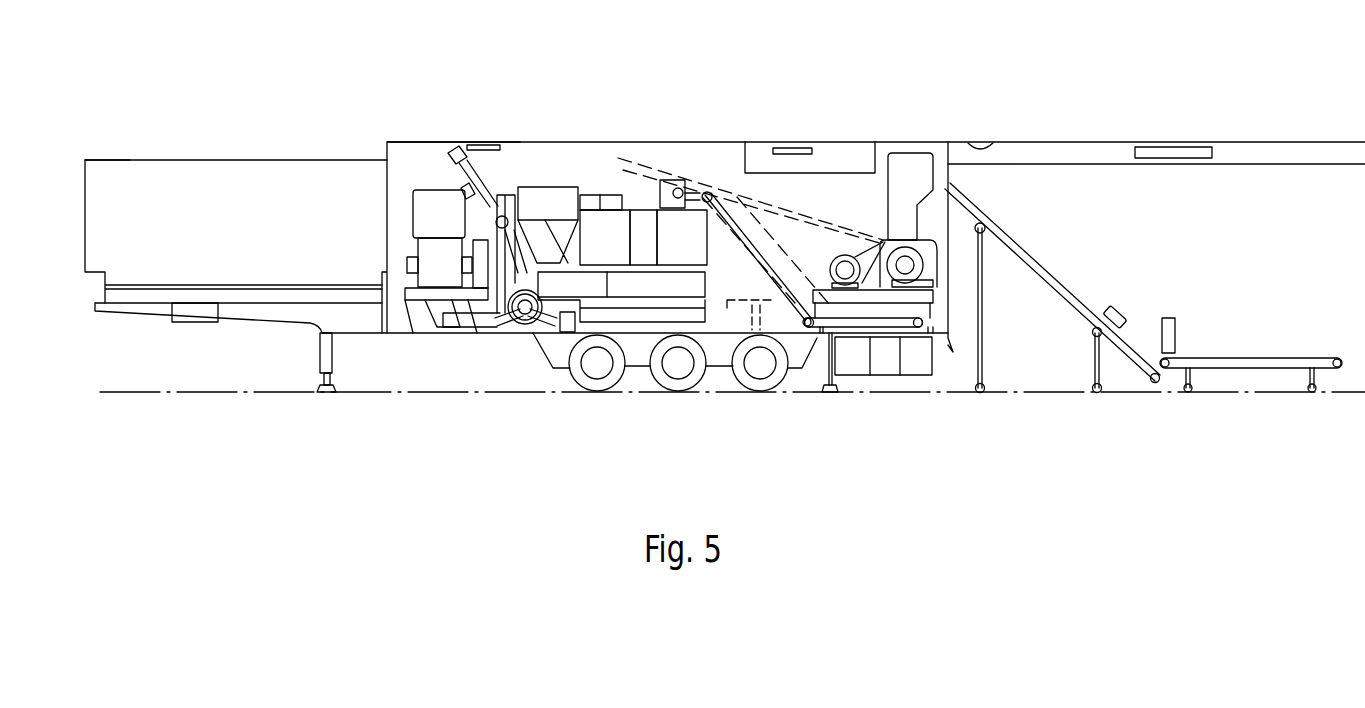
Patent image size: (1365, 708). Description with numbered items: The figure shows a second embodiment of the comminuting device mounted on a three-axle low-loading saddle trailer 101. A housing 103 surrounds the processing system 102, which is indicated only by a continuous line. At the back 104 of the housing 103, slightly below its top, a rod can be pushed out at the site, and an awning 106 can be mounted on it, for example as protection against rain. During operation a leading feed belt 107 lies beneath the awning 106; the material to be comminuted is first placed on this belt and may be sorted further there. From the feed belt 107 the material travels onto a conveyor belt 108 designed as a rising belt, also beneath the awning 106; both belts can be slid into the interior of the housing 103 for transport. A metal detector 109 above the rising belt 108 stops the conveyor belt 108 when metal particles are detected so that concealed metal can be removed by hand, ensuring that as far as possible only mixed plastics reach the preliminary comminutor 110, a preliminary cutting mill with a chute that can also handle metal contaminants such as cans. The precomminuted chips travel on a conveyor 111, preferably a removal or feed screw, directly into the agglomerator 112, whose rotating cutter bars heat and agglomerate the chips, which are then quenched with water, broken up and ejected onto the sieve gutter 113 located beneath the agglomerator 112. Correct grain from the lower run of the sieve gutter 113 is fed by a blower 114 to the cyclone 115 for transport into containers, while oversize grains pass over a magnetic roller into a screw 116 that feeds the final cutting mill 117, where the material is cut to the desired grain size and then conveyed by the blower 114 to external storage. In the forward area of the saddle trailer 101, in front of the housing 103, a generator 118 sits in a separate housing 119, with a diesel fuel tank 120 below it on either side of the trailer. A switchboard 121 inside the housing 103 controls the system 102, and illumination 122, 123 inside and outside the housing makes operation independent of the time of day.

The saddle trailer 101 is at (513, 322).
The system 102 is at (398, 152).
The housing 103 is at (838, 142).
The back 104 is at (946, 142).
The awning 106 is at (1086, 142).
The feed belt 107 is at (1279, 355).
The conveyor belt 108 is at (1036, 256).
The metal detector 109 is at (1125, 309).
The preliminary comminutor 110 is at (910, 151).
The conveyor 111 is at (723, 193).
The agglomerator 112 is at (608, 195).
The sieve gutter 113 is at (663, 281).
The blower 114 is at (519, 271).
The cyclone 115 is at (540, 177).
The screw 116 is at (440, 142).
The final cutting mill 117 is at (432, 208).
The generator 118 is at (183, 180).
The separate housing 119 is at (98, 158).
The diesel fuel tank 120 is at (367, 322).
The switchboard 121 is at (587, 195).
The illumination 122 is at (468, 145).
The illumination 123 is at (995, 145).